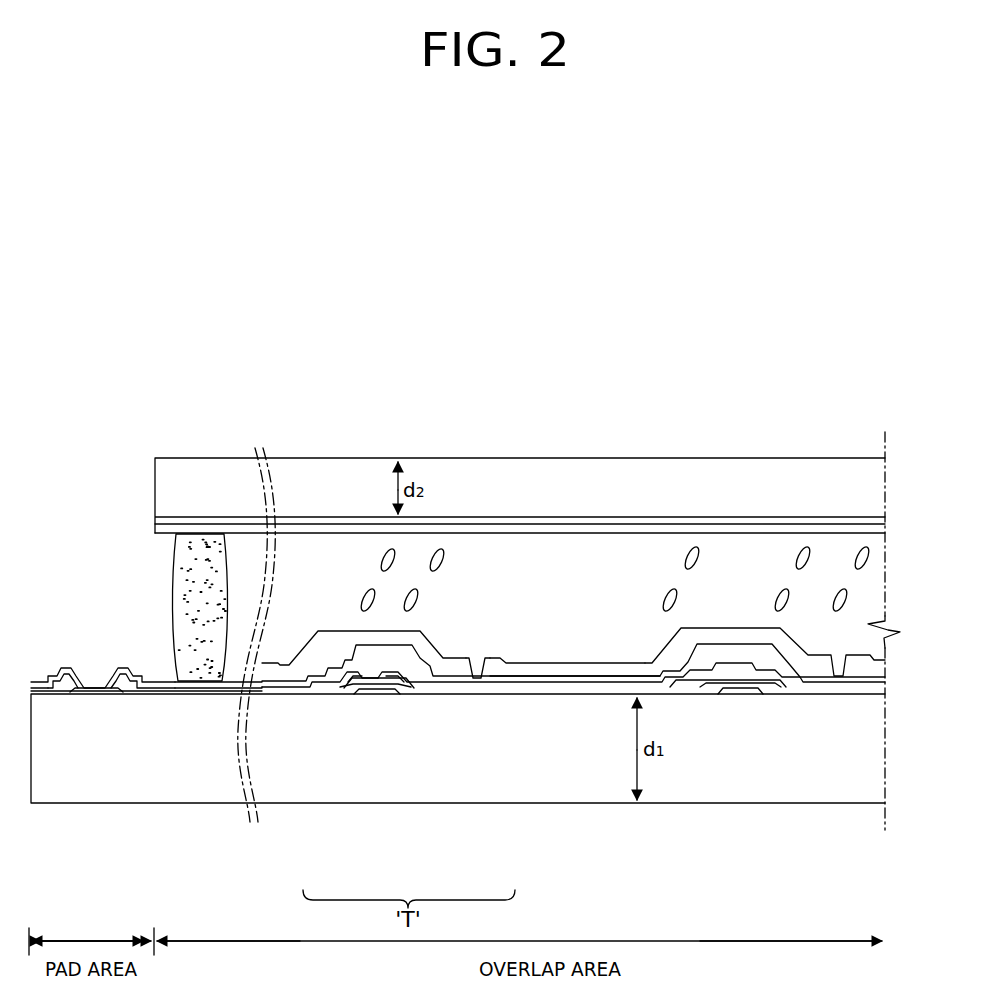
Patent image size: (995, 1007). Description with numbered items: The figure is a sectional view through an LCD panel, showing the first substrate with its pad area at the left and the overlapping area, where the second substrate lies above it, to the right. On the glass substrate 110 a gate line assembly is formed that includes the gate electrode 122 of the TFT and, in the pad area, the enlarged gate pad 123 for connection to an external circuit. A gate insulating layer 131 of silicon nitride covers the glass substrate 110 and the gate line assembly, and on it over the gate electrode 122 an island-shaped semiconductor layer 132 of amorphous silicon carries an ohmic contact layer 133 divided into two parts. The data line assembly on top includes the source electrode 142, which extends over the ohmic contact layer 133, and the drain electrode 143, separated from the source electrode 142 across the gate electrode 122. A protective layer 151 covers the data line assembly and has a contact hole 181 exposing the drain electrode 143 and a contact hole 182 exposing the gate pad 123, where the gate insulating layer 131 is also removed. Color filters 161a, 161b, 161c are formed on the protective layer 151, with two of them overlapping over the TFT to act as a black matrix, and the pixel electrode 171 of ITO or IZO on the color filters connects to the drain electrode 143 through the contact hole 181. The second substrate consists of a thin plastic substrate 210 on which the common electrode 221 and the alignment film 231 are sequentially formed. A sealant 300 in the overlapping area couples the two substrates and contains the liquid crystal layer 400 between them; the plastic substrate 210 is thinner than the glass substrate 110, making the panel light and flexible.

The glass substrate 110 is at (710, 802).
The gate electrode 122 is at (372, 692).
The gate pad 123 is at (100, 697).
The gate insulating layer 131 is at (160, 697).
The semiconductor layer 132 is at (400, 680).
The ohmic contact layer 133 is at (418, 679).
The source electrode 142 is at (330, 690).
The drain electrode 143 is at (482, 684).
The protective layer 151 is at (220, 694).
The color filter 161a is at (436, 657).
The color filter 161b is at (314, 637).
The color filter 161c is at (732, 631).
The pixel electrode 171 is at (622, 661).
The contact hole 181 is at (483, 652).
The contact hole 182 is at (88, 657).
The plastic substrate 210 is at (600, 466).
The common electrode 221 is at (681, 518).
The alignment film 231 is at (740, 526).
The sealant 300 is at (196, 546).
The liquid crystal layer 400 is at (533, 552).